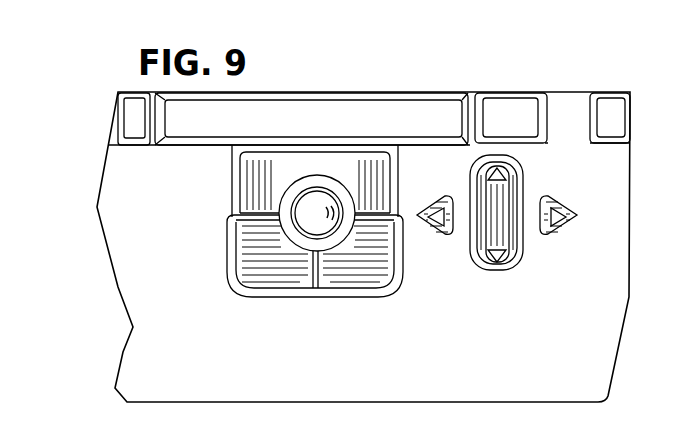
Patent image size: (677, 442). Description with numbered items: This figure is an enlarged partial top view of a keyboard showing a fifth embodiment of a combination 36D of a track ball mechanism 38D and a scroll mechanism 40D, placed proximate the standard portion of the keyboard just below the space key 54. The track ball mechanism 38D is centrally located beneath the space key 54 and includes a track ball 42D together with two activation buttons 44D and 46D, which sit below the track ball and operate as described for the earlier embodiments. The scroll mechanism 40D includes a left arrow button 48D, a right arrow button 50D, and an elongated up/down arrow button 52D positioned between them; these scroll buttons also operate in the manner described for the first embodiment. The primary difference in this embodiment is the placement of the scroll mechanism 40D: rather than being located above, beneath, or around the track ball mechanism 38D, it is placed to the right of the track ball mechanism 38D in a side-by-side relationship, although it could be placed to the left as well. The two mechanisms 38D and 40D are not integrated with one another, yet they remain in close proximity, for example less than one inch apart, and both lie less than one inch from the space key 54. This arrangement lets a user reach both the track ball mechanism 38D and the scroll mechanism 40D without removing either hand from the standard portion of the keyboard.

The space key 54 is at (427, 98).
The combination 36D is at (282, 268).
The track ball mechanism 38D is at (318, 316).
The scroll mechanism 40D is at (498, 271).
The track ball 42D is at (298, 210).
The activation button 44D is at (240, 243).
The activation button 46D is at (370, 264).
The left arrow button 48D is at (433, 237).
The right arrow button 50D is at (556, 237).
The up/down arrow button 52D is at (516, 239).